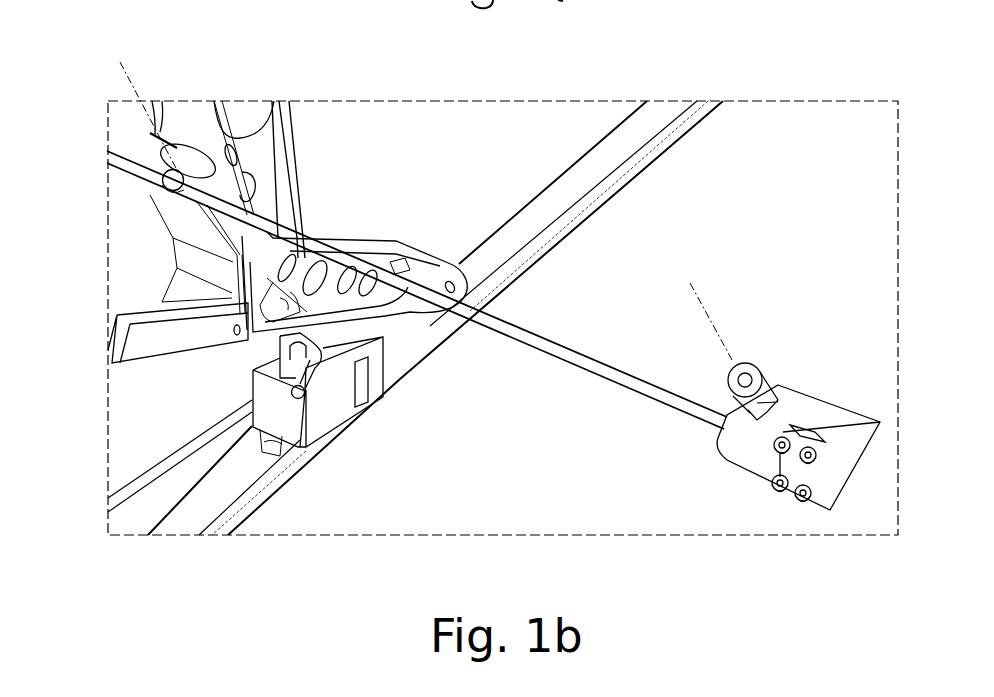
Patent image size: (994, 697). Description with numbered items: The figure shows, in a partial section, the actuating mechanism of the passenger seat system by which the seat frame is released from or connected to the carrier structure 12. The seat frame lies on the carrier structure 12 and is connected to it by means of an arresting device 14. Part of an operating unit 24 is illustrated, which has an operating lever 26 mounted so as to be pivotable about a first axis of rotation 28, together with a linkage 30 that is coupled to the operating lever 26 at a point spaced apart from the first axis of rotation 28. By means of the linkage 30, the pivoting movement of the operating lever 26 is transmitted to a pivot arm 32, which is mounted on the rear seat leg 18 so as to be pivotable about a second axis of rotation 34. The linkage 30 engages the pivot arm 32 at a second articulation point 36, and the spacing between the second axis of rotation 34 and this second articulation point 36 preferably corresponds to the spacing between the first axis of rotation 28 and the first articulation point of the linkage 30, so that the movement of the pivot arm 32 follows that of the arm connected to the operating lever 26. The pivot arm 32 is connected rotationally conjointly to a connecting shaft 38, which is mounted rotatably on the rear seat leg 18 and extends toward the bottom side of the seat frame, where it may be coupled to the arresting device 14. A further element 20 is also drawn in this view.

The carrier structure 12 is at (607, 160).
The arresting device 14 is at (360, 440).
The rear seat leg 18 is at (284, 137).
The connecting plate 20 is at (163, 345).
The operating unit 24 is at (843, 384).
The operating lever 26 is at (757, 362).
The first axis of rotation 28 is at (697, 287).
The linkage 30 is at (600, 368).
The pivot arm 32 is at (180, 140).
The second axis of rotation 34 is at (132, 78).
The second articulation point 36 is at (162, 188).
The connecting shaft 38 is at (256, 352).